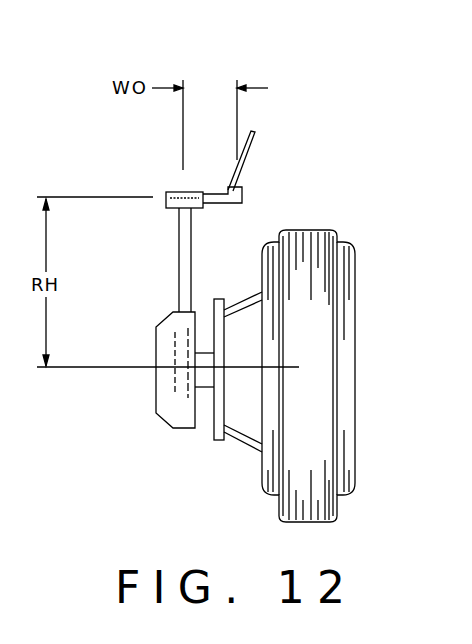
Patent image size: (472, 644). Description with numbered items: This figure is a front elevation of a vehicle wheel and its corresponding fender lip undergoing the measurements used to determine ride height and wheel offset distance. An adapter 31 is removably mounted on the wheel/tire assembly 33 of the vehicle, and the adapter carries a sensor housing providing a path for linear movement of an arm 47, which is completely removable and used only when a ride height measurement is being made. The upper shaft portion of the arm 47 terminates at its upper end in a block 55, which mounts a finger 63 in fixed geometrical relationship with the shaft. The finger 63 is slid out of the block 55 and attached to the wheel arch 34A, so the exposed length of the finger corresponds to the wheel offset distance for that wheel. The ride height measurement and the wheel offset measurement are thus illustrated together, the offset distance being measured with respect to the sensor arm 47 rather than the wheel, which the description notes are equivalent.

The block 55 is at (167, 192).
The arm 47 is at (179, 272).
The finger 63 is at (216, 206).
The wheel arch 34A is at (246, 167).
The wheel/tire assembly 33 is at (356, 343).
The adapter 31 is at (240, 440).